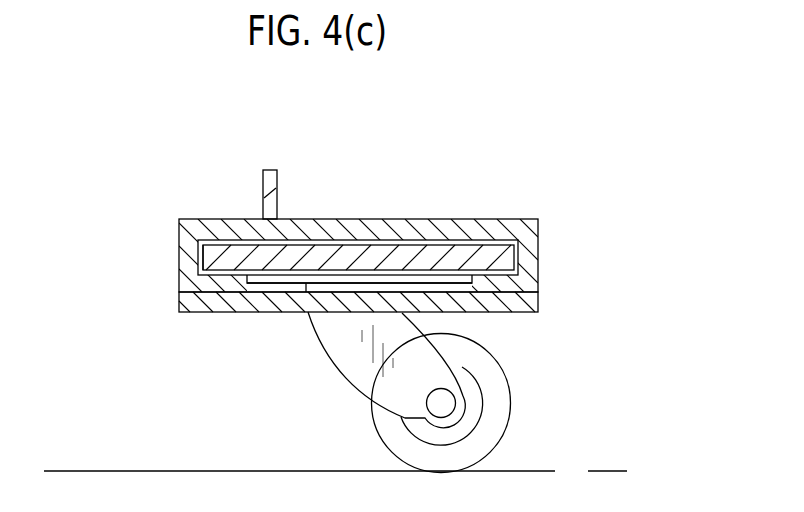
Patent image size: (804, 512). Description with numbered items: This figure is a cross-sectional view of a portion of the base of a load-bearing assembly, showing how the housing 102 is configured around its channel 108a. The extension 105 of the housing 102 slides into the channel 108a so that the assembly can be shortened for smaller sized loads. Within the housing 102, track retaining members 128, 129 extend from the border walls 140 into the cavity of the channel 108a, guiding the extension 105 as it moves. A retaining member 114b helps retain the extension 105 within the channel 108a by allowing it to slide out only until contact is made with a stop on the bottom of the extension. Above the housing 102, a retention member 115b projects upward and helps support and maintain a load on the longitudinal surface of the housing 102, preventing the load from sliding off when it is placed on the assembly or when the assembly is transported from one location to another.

The housing 102 is at (482, 122).
The extension 105 is at (208, 252).
The channel 108a is at (443, 279).
The retaining member 114b is at (182, 312).
The retention member 115b is at (277, 176).
The track retaining member 128 is at (495, 277).
The track retaining member 129 is at (233, 285).
The border wall 140 is at (528, 263).